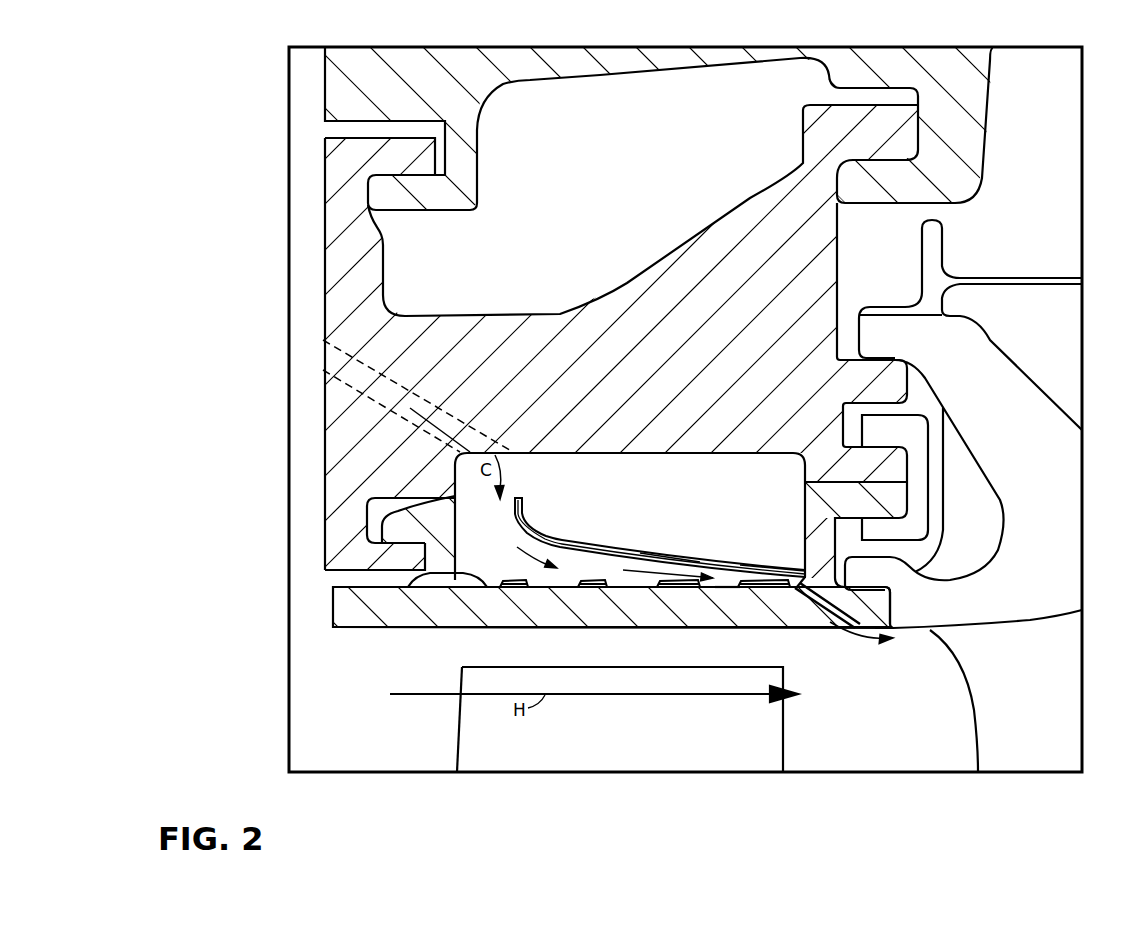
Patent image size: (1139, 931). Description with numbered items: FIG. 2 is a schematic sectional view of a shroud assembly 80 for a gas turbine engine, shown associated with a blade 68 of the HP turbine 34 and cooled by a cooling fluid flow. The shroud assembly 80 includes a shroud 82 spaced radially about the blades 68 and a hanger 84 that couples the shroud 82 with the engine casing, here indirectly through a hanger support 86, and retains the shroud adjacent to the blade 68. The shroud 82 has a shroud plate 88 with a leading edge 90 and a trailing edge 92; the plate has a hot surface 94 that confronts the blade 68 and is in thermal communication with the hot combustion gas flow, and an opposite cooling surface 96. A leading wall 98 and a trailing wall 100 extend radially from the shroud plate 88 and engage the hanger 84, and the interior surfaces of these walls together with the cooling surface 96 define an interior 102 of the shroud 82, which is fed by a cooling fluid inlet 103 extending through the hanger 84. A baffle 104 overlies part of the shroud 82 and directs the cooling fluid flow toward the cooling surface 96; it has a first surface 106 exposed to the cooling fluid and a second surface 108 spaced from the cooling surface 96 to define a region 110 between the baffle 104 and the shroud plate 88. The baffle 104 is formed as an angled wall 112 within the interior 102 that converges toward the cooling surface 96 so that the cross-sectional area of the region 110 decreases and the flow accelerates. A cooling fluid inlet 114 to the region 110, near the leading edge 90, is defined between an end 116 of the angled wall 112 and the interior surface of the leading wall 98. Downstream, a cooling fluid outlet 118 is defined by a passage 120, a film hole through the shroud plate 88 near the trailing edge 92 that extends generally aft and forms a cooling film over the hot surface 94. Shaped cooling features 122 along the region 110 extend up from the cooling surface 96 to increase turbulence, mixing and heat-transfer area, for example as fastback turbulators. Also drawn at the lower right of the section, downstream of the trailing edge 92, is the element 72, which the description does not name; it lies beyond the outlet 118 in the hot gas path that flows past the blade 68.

The HP turbine 34 is at (447, 746).
The blade 68 is at (639, 753).
The outer panel 72 is at (1022, 709).
The shroud assembly 80 is at (311, 282).
The shroud 82 is at (320, 636).
The hanger 84 is at (311, 480).
The hanger support 86 is at (1000, 148).
The shroud plate 88 is at (600, 634).
The leading edge 90 is at (335, 606).
The trailing edge 92 is at (890, 608).
The hot surface 94 is at (468, 629).
The cooling surface 96 is at (452, 582).
The leading wall 98 is at (420, 551).
The trailing wall 100 is at (882, 531).
The interior 102 is at (674, 523).
The cooling fluid inlet 103 is at (392, 395).
The baffle 104 is at (538, 515).
The first surface 106 is at (730, 568).
The second surface 108 is at (728, 597).
The region 110 is at (609, 579).
The angled wall 112 is at (695, 548).
The cooling fluid inlet 114 is at (507, 549).
The end 116 is at (516, 497).
The cooling fluid outlet 118 is at (819, 592).
The passage 120 is at (893, 595).
The shaped cooling feature 122 is at (523, 602).